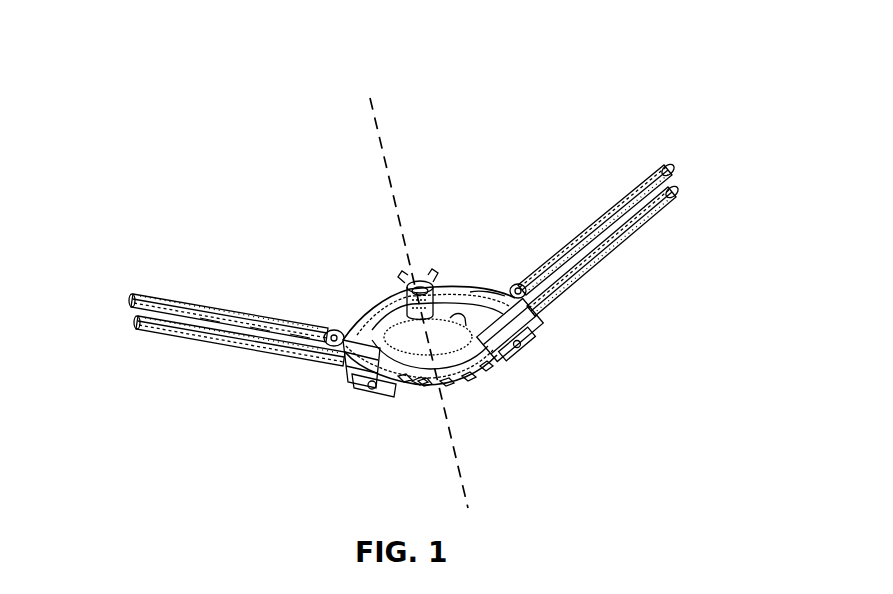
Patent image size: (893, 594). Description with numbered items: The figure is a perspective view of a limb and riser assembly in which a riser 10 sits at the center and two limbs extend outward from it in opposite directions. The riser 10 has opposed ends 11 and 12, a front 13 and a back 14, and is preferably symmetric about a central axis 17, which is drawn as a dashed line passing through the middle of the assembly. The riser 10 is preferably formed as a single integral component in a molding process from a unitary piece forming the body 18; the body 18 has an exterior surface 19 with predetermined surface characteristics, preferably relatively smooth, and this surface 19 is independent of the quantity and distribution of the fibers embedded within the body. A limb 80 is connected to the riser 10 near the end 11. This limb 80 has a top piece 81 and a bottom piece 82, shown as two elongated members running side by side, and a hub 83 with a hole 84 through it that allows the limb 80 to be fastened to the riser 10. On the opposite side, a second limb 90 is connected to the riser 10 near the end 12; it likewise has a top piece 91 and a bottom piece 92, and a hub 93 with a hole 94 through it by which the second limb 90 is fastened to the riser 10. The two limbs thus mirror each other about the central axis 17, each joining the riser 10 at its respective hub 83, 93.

The riser 10 is at (376, 307).
The end 11 is at (336, 330).
The end 12 is at (519, 284).
The front 13 is at (423, 383).
The back 14 is at (428, 278).
The central axis 17 is at (465, 487).
The body 18 is at (454, 322).
The exterior surface 19 is at (490, 297).
The limb 80 is at (188, 360).
The top piece 81 is at (153, 300).
The bottom piece 82 is at (160, 333).
The hub 83 is at (353, 383).
The hole 84 is at (372, 377).
The second limb 90 is at (645, 215).
The top piece 91 is at (664, 167).
The bottom piece 92 is at (637, 233).
The hub 93 is at (497, 368).
The hole 94 is at (522, 343).